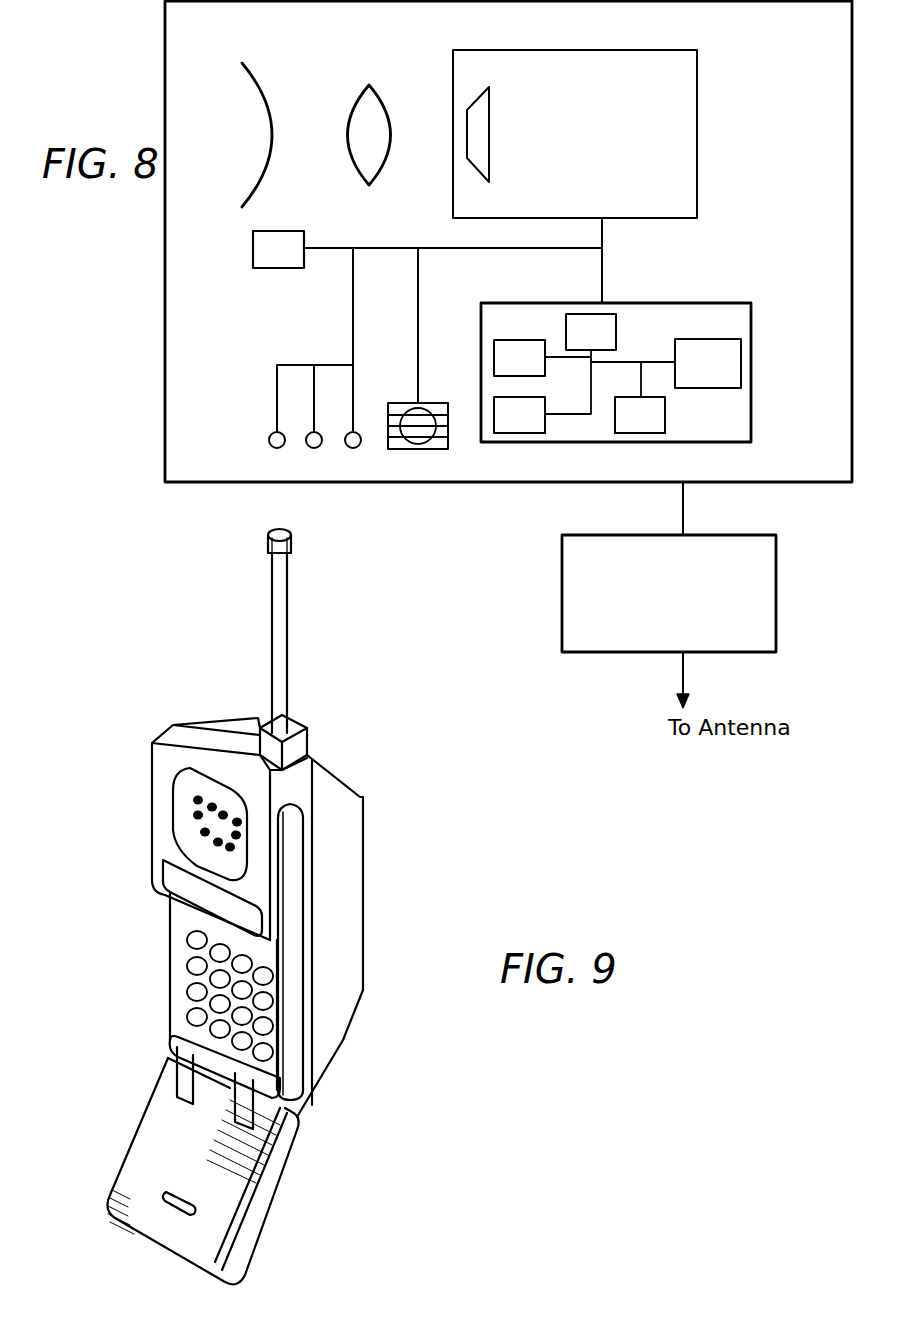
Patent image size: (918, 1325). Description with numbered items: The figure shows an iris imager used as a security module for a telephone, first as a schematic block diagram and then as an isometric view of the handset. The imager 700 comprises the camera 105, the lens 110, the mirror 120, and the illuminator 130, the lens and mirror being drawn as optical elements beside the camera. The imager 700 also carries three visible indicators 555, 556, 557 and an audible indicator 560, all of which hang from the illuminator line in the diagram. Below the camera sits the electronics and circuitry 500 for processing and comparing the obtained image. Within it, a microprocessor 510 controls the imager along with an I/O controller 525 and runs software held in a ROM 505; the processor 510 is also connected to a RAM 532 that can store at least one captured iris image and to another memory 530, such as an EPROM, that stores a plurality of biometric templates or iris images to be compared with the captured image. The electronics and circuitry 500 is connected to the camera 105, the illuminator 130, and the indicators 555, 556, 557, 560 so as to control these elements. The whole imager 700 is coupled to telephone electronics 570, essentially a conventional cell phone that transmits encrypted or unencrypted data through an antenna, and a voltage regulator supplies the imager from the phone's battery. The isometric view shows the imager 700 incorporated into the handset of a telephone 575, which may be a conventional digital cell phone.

In FIG. 8, the imager 700 is at (837, 33).
In FIG. 9, the imager 700 is at (357, 921).
In FIG. 8, the mirror 120 is at (252, 73).
In FIG. 8, the lens 110 is at (380, 98).
In FIG. 8, the camera 105 is at (690, 215).
In FIG. 8, the illuminator 130 is at (297, 265).
In FIG. 8, the visible indicator 555 is at (284, 445).
In FIG. 8, the visible indicator 556 is at (321, 445).
In FIG. 8, the visible indicator 557 is at (359, 445).
In FIG. 8, the audible indicator 560 is at (416, 449).
In FIG. 8, the electronics and circuitry 500 is at (746, 329).
In FIG. 8, the RAM 532 is at (610, 346).
In FIG. 8, the I/O controller 525 is at (538, 372).
In FIG. 8, the memory 530 is at (538, 429).
In FIG. 8, the ROM 505 is at (659, 429).
In FIG. 8, the microprocessor 510 is at (727, 370).
In FIG. 8, the telephone electronics 570 is at (768, 566).
In FIG. 9, the telephone 575 is at (308, 1040).